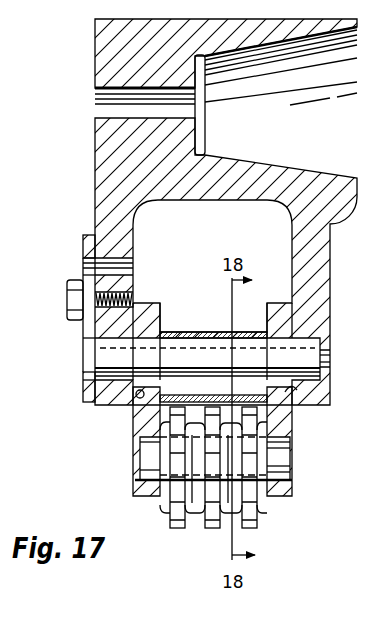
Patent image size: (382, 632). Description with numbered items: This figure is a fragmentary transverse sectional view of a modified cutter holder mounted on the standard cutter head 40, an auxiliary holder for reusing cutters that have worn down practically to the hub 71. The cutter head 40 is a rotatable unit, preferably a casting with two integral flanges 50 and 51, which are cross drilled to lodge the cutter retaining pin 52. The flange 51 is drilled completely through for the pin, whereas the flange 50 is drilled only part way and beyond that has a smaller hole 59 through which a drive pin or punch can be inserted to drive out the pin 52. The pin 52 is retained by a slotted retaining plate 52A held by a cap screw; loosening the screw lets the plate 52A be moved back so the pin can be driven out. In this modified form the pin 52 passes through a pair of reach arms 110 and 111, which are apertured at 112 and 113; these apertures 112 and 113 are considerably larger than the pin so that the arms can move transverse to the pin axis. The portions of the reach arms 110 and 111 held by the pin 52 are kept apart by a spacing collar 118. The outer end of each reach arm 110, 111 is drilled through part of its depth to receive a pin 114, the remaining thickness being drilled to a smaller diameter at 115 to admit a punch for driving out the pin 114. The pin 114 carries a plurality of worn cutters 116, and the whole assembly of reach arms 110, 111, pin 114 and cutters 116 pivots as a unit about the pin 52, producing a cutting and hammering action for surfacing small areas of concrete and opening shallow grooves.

The cutter head 40 is at (94, 150).
The flange 51 is at (105, 189).
The flange 50 is at (322, 275).
The retaining plate 52A is at (86, 242).
The pin 52 is at (104, 356).
The spacing collar 118 is at (186, 331).
The hole 59 is at (328, 362).
The aperture 113 is at (300, 386).
The reach arm 110 is at (133, 425).
The reach arm 111 is at (292, 420).
The aperture 112 is at (136, 407).
The smaller diameter hole 115 is at (136, 460).
The pin 114 is at (148, 462).
The hub 71 is at (203, 505).
The cutters 116 is at (210, 528).